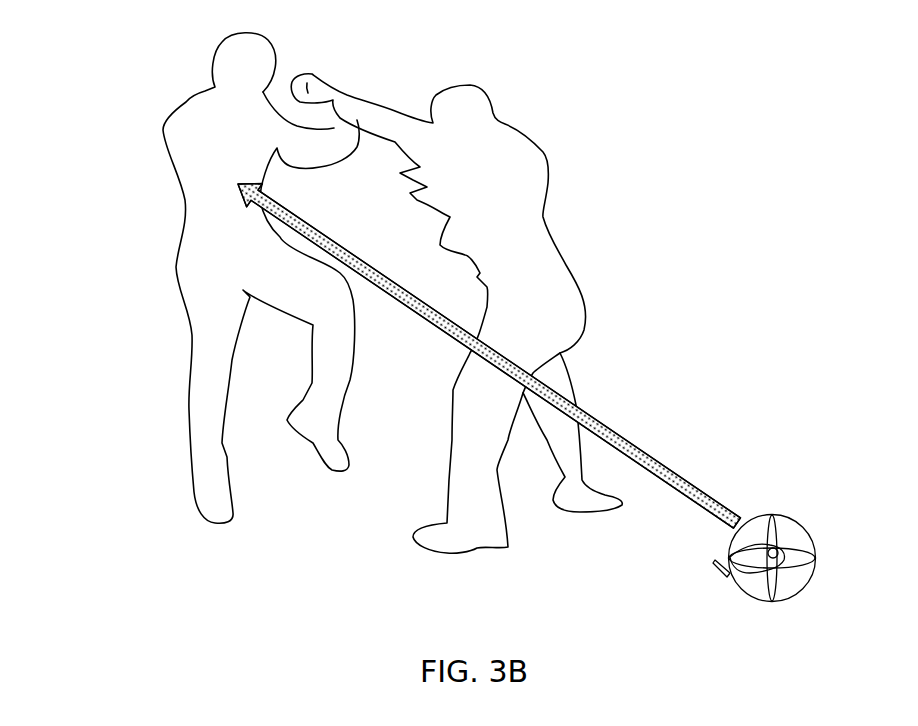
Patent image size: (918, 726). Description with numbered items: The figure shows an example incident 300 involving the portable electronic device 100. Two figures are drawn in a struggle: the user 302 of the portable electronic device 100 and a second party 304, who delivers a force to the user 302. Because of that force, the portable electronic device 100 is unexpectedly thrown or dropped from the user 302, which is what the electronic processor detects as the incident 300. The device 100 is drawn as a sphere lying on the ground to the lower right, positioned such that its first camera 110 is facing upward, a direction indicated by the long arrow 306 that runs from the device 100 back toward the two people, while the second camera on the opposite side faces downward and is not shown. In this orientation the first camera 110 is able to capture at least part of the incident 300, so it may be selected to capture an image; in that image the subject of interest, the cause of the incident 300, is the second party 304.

The portable electronic device 100 is at (802, 589).
The first camera 110 is at (778, 548).
The incident 300 is at (461, 319).
The user 302 is at (543, 152).
The second party 304 is at (221, 41).
The arrow 306 is at (652, 457).